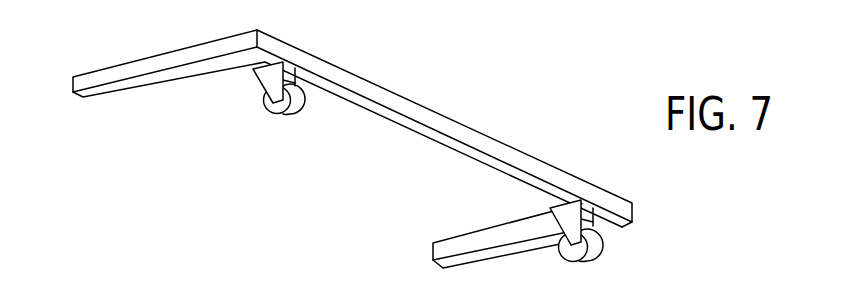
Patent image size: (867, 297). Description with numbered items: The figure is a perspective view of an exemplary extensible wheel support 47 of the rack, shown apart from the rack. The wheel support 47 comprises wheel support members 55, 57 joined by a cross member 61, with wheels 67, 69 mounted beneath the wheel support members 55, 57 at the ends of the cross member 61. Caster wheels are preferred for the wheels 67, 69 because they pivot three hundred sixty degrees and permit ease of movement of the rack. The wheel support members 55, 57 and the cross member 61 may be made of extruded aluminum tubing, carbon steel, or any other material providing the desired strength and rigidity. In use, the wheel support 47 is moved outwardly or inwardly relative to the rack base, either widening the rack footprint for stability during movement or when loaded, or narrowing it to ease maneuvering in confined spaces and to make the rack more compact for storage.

The right wheel support 47 is at (470, 90).
The wheel support member 55 is at (150, 54).
The wheel support member 57 is at (487, 239).
The cross member 61 is at (508, 146).
The wheel 67 is at (287, 127).
The wheel 69 is at (600, 253).